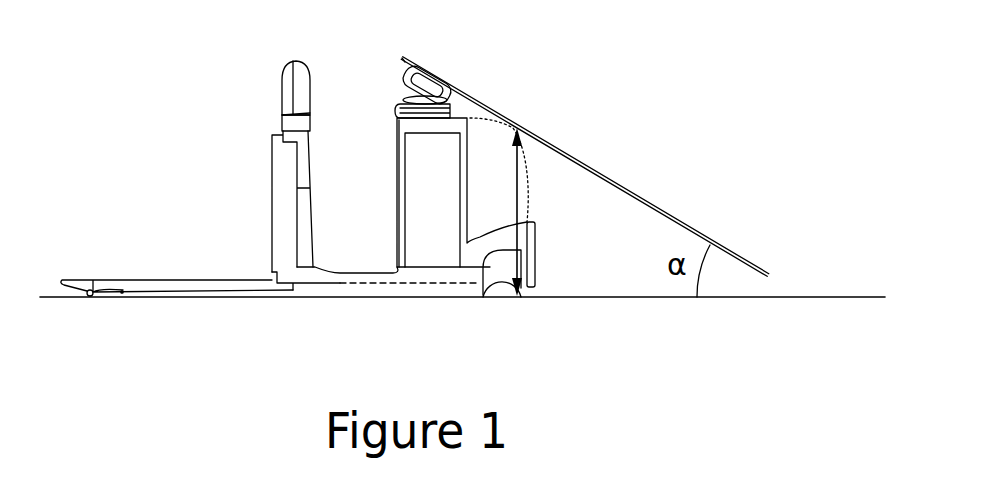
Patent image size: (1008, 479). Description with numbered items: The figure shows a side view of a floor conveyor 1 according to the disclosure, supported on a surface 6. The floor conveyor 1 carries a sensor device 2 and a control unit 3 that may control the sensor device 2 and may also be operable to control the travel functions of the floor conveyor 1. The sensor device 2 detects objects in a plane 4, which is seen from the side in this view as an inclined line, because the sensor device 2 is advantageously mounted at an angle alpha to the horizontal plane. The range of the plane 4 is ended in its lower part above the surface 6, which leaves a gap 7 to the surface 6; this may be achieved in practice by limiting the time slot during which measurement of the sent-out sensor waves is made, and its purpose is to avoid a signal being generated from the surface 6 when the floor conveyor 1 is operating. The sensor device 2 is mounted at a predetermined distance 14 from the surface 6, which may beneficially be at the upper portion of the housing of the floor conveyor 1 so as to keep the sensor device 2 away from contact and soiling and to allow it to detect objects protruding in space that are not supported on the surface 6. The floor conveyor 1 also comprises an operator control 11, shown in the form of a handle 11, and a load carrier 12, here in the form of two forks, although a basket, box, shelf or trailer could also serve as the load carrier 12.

The floor conveyor 1 is at (415, 205).
The sensor device 2 is at (517, 122).
The control unit 3 is at (428, 77).
The plane 4 is at (568, 157).
The surface 6 is at (572, 297).
The gap 7 is at (350, 248).
The operator control 11 is at (403, 80).
The load carrier 12 is at (97, 280).
The predetermined distance 14 is at (482, 270).